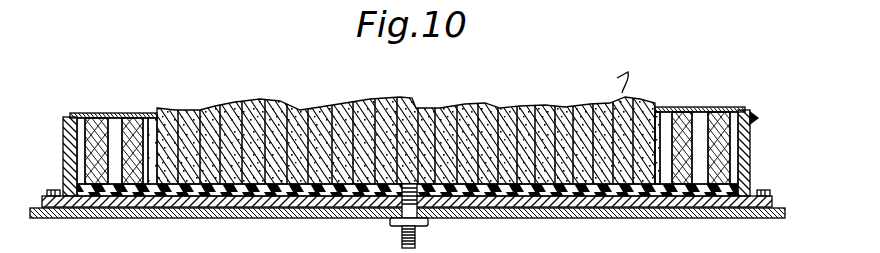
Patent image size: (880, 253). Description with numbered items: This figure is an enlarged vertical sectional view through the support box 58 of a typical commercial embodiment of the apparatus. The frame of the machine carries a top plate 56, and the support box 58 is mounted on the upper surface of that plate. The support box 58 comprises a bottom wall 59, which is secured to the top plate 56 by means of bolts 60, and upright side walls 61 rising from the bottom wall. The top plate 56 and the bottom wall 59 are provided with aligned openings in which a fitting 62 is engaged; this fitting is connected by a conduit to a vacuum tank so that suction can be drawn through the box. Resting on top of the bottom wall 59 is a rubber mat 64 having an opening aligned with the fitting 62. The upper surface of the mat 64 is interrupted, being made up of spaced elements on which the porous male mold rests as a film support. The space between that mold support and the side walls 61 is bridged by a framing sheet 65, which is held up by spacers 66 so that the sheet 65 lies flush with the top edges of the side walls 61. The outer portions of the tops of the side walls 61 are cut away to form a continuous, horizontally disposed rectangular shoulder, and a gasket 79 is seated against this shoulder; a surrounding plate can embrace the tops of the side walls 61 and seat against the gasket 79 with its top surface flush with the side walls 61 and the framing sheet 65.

The top plate 56 is at (297, 208).
The support box 58 is at (752, 122).
The bottom wall 59 is at (602, 203).
The bolts 60 is at (767, 184).
The side walls 61 is at (68, 135).
The fitting 62 is at (392, 220).
The rubber mat 64 is at (545, 193).
The framing sheet 65 is at (728, 107).
The spacers 66 is at (130, 148).
The gasket 79 is at (66, 116).